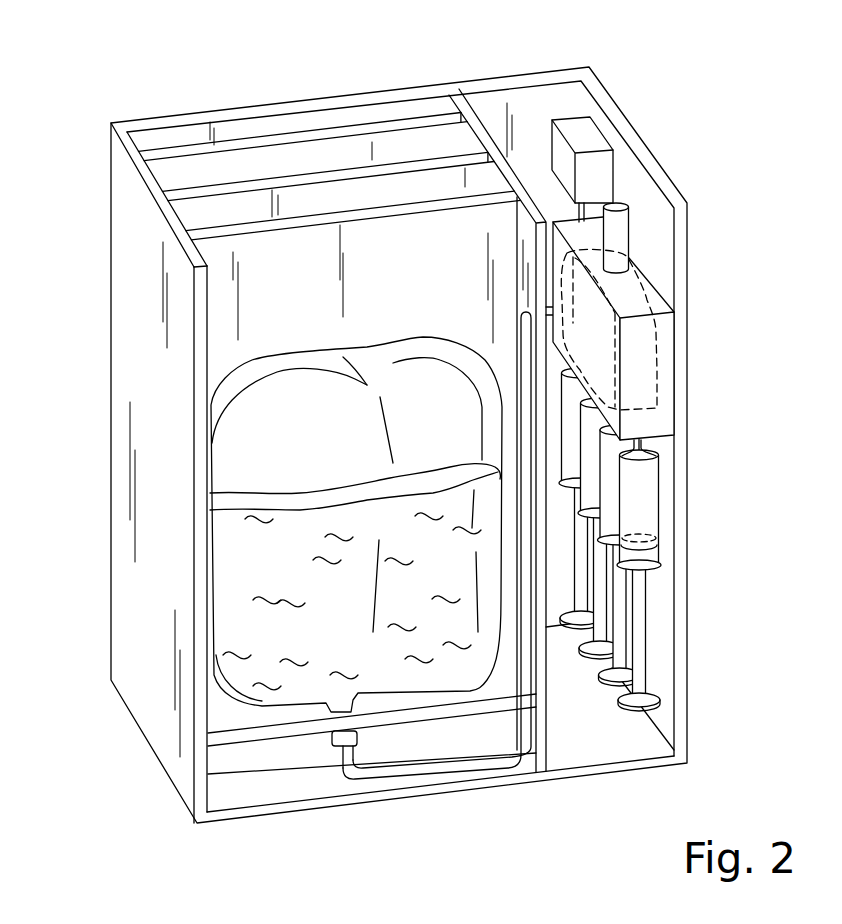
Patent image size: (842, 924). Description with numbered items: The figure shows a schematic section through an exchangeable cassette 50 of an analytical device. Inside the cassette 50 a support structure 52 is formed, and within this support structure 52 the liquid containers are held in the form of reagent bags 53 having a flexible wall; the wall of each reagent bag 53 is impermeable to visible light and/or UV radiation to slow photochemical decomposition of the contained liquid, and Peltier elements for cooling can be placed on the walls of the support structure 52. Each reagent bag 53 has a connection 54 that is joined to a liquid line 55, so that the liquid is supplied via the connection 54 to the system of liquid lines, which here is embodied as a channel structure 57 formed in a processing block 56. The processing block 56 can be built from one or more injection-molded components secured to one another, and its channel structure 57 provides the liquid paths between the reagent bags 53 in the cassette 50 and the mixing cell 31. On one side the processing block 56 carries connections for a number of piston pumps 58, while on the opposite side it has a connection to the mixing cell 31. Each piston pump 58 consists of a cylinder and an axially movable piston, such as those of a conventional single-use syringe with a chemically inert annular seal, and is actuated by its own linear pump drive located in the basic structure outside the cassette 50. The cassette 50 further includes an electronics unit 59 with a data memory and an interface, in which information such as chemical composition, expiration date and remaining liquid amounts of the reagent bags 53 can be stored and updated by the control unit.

The exchangeable cassette 50 is at (132, 360).
The support structure 52 is at (317, 245).
The reagent bag 53 is at (230, 465).
The connection 54 is at (332, 738).
The liquid line 55 is at (412, 772).
The processing block 56 is at (667, 402).
The channel structure 57 is at (670, 367).
The piston pump 58 is at (649, 506).
The electronics unit 59 is at (596, 137).
The mixing cell 31 is at (624, 233).